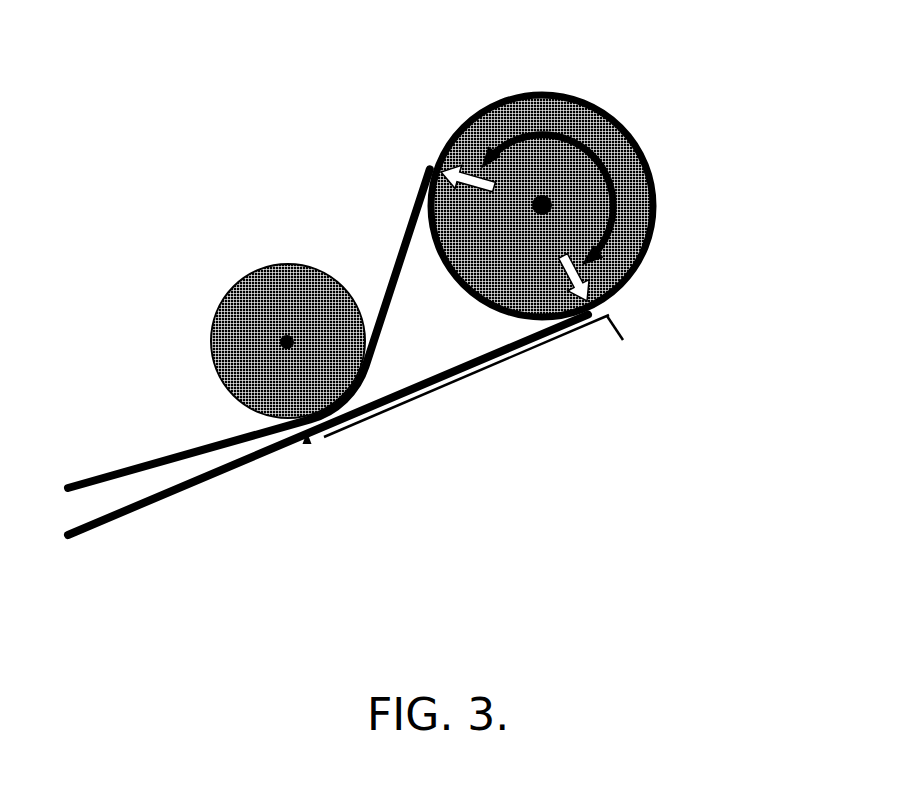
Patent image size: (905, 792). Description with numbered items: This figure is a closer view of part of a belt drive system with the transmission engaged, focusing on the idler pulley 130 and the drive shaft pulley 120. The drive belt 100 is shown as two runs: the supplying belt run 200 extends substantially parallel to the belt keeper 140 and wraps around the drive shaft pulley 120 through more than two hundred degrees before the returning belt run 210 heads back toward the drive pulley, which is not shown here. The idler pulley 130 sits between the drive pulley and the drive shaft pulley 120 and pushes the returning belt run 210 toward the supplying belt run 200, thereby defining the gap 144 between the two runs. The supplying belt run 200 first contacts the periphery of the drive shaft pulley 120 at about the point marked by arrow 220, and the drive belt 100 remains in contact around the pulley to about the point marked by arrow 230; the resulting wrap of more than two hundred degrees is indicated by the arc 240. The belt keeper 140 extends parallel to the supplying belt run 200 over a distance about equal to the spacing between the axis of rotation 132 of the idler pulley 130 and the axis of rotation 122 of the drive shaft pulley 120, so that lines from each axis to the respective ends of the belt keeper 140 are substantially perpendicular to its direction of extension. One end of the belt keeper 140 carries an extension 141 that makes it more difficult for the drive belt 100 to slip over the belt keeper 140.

The drive belt 100 is at (655, 215).
The drive shaft pulley 120 is at (620, 128).
The axis of rotation of the drive shaft pulley 122 is at (537, 199).
The idler pulley 130 is at (288, 264).
The axis of rotation of the idler pulley 132 is at (286, 341).
The belt keeper 140 is at (490, 365).
The extension 141 is at (626, 341).
The gap 144 is at (308, 442).
The supplying belt run 200 is at (130, 512).
The returning belt run 210 is at (153, 460).
The arrow 220 is at (615, 295).
The arrow 230 is at (440, 172).
The arc 240 is at (567, 138).